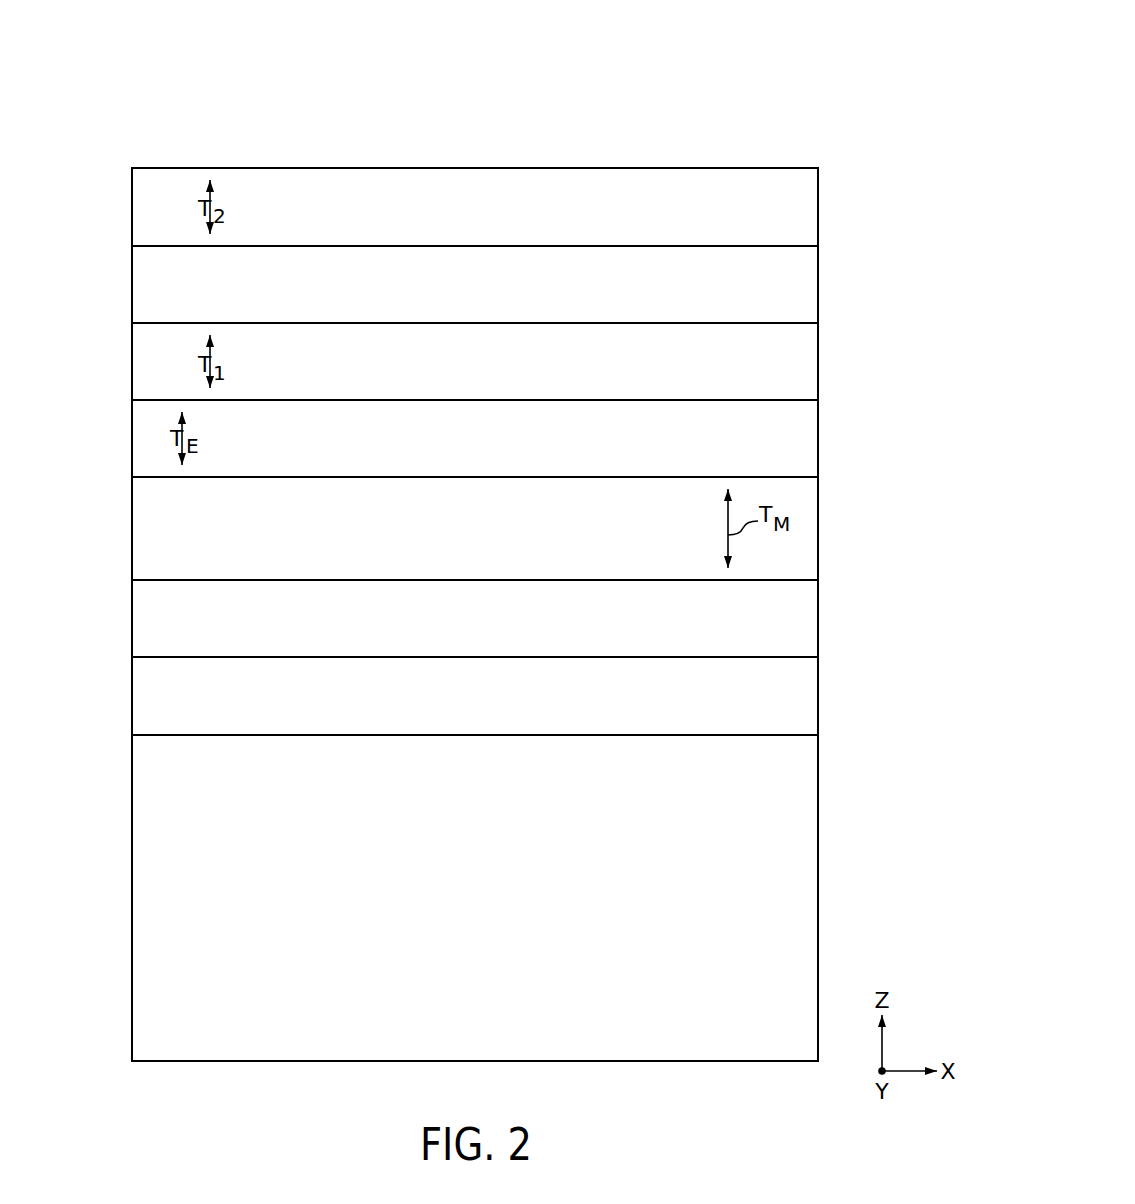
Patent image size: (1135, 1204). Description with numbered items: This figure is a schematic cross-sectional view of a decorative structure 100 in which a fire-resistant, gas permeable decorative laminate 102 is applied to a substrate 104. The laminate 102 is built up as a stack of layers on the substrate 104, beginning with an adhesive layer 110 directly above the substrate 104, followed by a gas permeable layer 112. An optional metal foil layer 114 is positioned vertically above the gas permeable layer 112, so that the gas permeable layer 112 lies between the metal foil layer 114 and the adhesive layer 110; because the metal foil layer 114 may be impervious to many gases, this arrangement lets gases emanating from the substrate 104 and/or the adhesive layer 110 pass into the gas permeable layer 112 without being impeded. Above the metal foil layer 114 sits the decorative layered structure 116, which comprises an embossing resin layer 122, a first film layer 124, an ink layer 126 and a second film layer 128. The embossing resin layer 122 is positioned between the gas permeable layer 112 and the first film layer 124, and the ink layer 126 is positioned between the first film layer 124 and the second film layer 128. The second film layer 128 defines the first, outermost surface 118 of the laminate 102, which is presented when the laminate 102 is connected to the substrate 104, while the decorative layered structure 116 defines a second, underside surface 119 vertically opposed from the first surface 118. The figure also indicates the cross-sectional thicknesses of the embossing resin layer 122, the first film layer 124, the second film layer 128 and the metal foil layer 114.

The decorative structure 100 is at (732, 118).
The fire-resistant, gas permeable decorative laminate 102 is at (120, 168).
The substrate 104 is at (818, 897).
The adhesive layer 110 is at (818, 697).
The gas permeable layer 112 is at (818, 618).
The metal foil layer 114 is at (818, 532).
The decorative layered structure 116 is at (889, 168).
The first surface 118 is at (475, 168).
The second surface 119 is at (608, 480).
The embossing resin layer 122 is at (818, 440).
The first film layer 124 is at (818, 362).
The ink layer 126 is at (818, 285).
The second film layer 128 is at (818, 207).